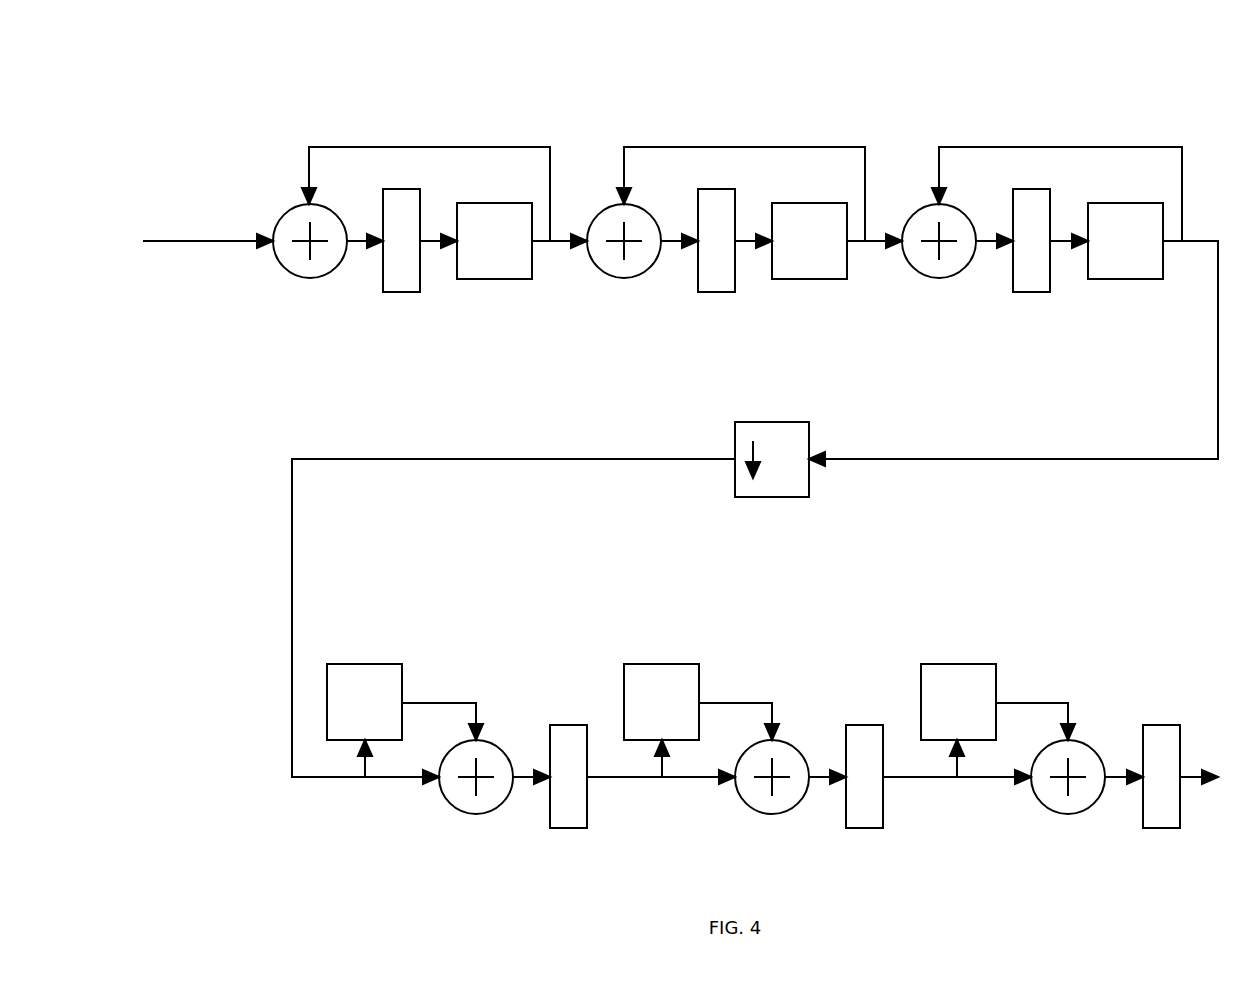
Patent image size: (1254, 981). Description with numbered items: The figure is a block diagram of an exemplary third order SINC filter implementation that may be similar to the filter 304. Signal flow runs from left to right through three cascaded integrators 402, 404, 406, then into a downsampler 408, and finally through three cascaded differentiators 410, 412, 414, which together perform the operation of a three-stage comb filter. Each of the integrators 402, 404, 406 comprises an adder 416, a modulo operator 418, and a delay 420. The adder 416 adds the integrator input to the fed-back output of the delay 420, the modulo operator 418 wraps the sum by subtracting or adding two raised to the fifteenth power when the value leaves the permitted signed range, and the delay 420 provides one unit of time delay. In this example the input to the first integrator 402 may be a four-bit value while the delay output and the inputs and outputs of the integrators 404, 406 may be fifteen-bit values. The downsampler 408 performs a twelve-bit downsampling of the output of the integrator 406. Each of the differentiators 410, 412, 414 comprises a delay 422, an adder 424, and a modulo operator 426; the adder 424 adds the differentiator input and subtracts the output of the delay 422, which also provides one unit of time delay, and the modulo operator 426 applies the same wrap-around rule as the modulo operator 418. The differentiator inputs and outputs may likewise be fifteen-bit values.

The filter 304 is at (174, 75).
The integrator 402 is at (254, 130).
The integrator 404 is at (569, 130).
The integrator 406 is at (883, 130).
The downsampler 408 is at (810, 442).
The differentiator 410 is at (318, 640).
The differentiator 412 is at (616, 640).
The differentiator 414 is at (912, 640).
The adder 416 is at (303, 278).
The modulo operator 418 is at (394, 292).
The delay 420 is at (488, 279).
The delay 422 is at (402, 693).
The adder 424 is at (470, 815).
The modulo operator 426 is at (558, 828).